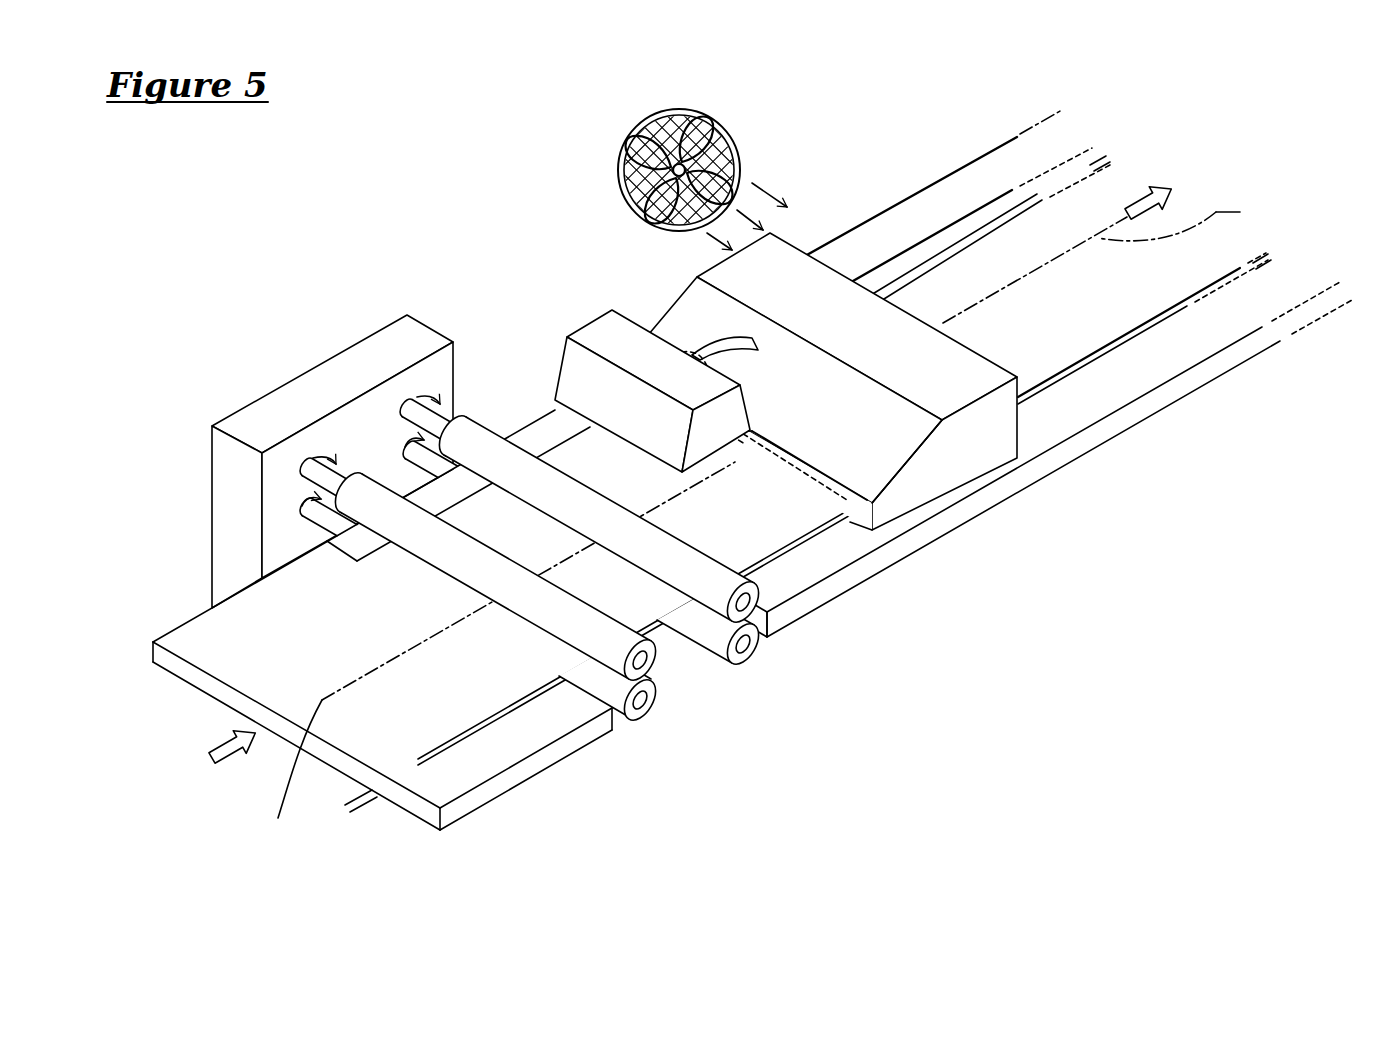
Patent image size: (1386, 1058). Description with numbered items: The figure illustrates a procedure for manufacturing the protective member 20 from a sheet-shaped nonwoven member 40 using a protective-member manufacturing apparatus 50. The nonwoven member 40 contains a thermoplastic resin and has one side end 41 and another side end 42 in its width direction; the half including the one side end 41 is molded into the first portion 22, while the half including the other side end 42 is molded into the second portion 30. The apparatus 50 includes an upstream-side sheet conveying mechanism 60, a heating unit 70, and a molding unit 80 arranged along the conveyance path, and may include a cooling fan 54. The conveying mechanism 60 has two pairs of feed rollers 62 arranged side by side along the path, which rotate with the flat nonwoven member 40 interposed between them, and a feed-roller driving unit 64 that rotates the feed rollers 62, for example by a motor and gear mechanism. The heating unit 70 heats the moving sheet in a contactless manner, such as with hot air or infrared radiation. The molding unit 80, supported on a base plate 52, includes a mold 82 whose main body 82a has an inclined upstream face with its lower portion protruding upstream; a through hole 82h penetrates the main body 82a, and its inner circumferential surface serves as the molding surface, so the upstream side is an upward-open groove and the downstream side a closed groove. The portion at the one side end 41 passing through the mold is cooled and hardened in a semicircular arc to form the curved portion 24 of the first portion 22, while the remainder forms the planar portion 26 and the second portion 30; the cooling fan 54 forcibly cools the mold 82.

The protective member 20 is at (998, 178).
The first portion 22 is at (922, 112).
The curved portion 24 is at (928, 255).
The planar portion 26 is at (901, 295).
The second portion 30 is at (1073, 337).
The sheet-shaped nonwoven member 40 is at (255, 640).
The one side end 41 is at (993, 222).
The another side end 42 is at (1133, 335).
The protective-member manufacturing apparatus 50 is at (553, 205).
The base plate 52 is at (842, 597).
The cooling fan 54 is at (628, 134).
The upstream-side sheet conveying mechanism 60 is at (322, 305).
The pair of feed rollers 62 is at (748, 650).
The feed-roller driving unit 64 is at (380, 345).
The heating unit 70 is at (577, 322).
The molding unit 80 is at (660, 290).
The mold 82 is at (787, 268).
The main body 82a is at (957, 473).
The through hole 82h is at (735, 356).